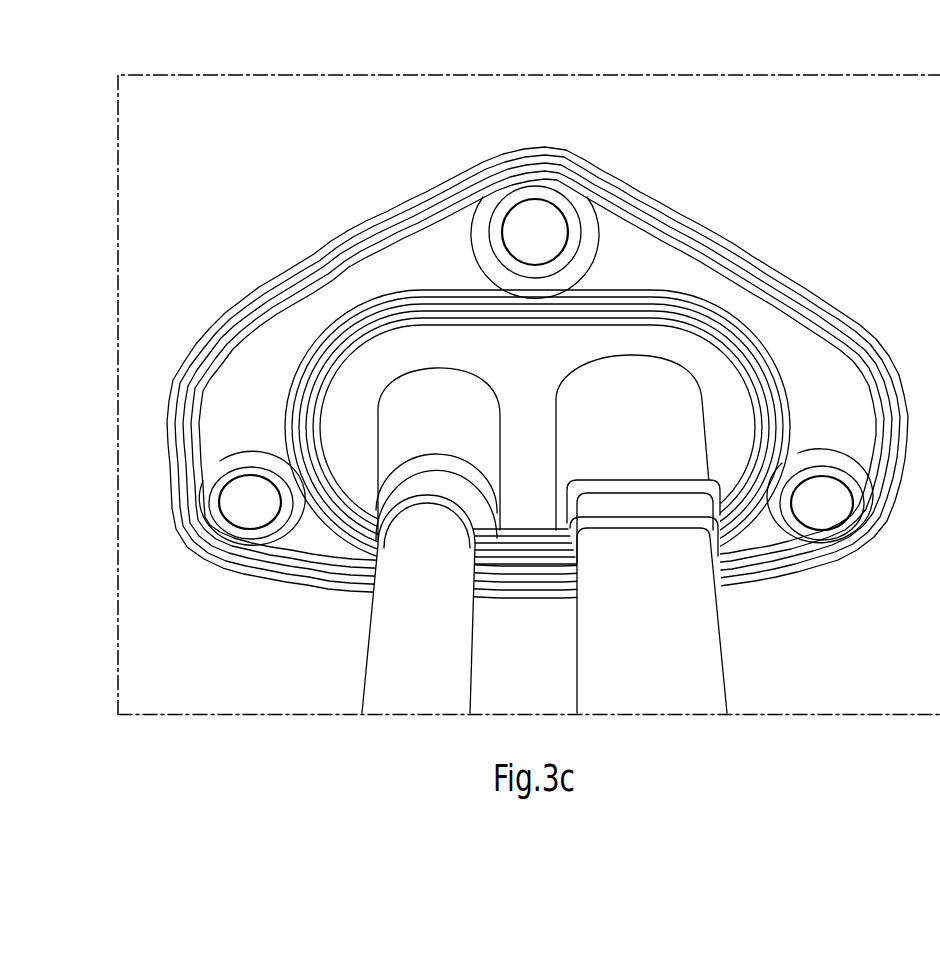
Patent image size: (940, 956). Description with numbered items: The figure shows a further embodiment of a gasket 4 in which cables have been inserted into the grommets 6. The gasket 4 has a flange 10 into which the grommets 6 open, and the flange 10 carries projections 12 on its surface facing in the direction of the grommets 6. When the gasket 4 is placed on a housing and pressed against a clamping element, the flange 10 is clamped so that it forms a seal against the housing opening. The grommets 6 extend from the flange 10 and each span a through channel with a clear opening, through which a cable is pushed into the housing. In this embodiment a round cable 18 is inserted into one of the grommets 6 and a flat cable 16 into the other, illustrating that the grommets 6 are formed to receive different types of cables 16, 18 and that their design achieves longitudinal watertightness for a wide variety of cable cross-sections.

The gasket 4 is at (844, 163).
The grommets 6 is at (400, 410).
The flange 10 is at (383, 214).
The projections 12 is at (627, 297).
The flat cable 16 is at (700, 645).
The round cable 18 is at (390, 655).